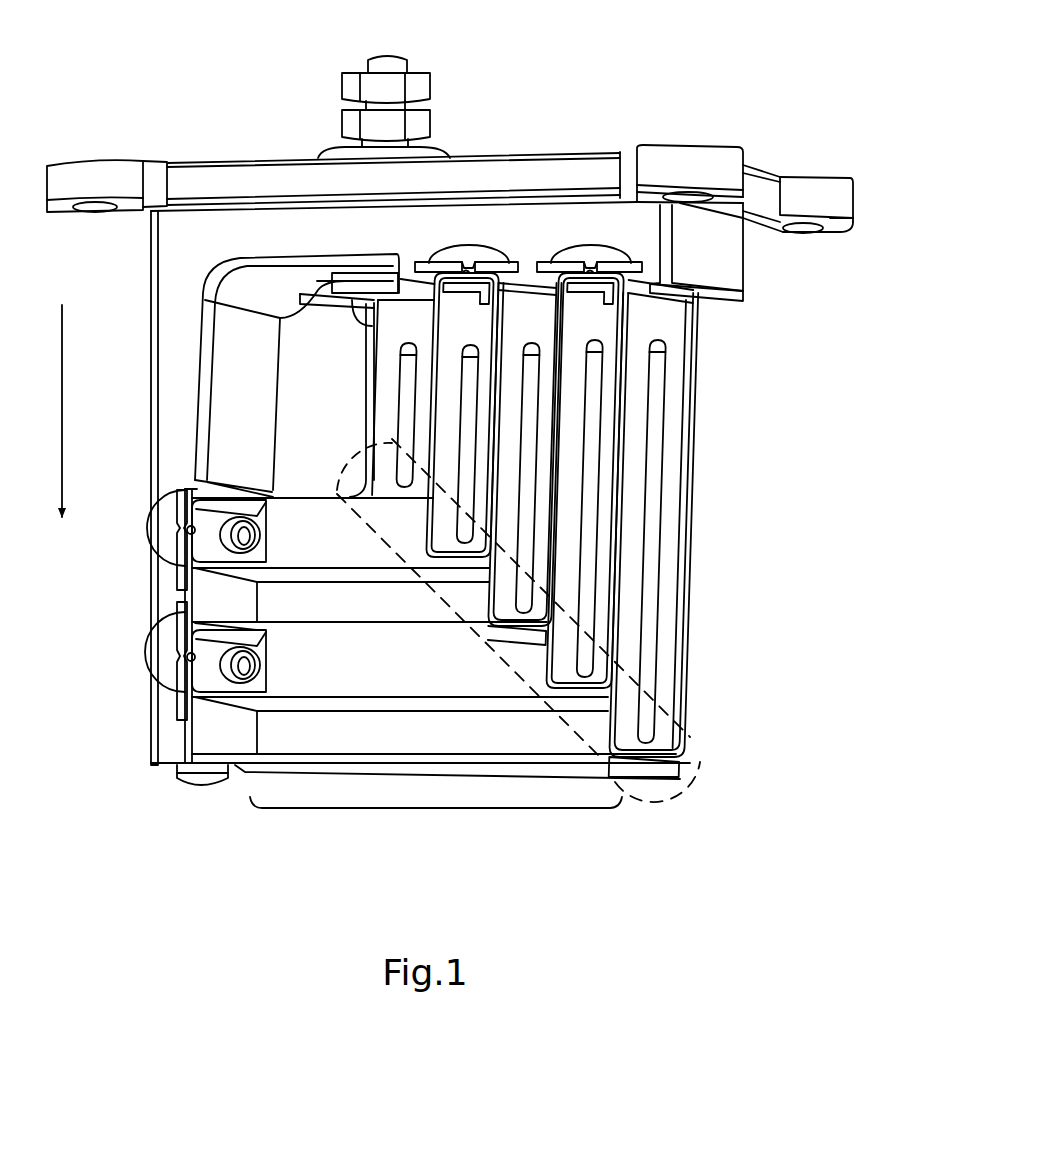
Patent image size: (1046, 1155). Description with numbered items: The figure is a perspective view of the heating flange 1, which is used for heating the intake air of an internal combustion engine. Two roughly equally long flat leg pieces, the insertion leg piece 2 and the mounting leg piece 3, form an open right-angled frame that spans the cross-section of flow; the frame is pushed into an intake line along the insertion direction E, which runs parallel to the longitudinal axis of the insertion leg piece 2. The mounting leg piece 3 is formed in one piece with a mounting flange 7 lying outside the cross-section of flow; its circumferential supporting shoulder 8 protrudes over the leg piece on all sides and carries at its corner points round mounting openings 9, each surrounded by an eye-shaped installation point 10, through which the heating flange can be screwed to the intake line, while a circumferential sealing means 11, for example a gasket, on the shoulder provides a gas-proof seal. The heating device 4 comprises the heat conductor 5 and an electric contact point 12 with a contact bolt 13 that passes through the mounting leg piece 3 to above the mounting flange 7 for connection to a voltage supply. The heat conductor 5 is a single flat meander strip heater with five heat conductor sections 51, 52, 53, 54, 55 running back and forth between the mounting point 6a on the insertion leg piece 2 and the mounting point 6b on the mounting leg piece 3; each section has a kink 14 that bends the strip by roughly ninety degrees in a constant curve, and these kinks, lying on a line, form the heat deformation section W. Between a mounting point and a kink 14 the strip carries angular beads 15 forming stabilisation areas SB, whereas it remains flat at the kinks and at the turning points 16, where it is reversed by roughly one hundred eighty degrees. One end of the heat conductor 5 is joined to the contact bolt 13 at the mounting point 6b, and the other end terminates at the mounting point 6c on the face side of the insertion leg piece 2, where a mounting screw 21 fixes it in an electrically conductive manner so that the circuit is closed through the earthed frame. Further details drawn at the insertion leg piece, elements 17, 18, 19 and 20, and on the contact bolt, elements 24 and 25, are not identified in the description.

The heating flange 1 is at (677, 58).
The insertion leg piece 2 is at (165, 389).
The mounting leg piece 3 is at (742, 288).
The heating device 4 is at (774, 487).
The heat conductor 5 is at (762, 338).
The heat conductor section 51 is at (687, 333).
The heat conductor section 52 is at (608, 378).
The heat conductor section 53 is at (550, 399).
The heat conductor section 54 is at (483, 414).
The heat conductor section 55 is at (421, 444).
The mounting point 6a is at (168, 716).
The mounting point 6b is at (585, 232).
The mounting point 6c is at (202, 800).
The mounting flange 7 is at (541, 174).
The supporting shoulder 8 is at (836, 233).
The mounting opening 9 is at (806, 235).
The installation point 10 is at (845, 195).
The sealing means 11 is at (848, 229).
The electric contact point 12 is at (346, 55).
The contact bolt 13 is at (392, 64).
The kink 14 is at (600, 702).
The angular bead 15 is at (646, 633).
The turning point 16 is at (186, 689).
The rivet 17 is at (185, 671).
The spring clip 18 is at (176, 636).
The upper tab 19 is at (180, 573).
The rivet 20 is at (185, 529).
The mounting screw 21 is at (183, 781).
The lower nut 24 is at (345, 123).
The upper nut 25 is at (344, 84).
The insertion direction E is at (62, 396).
The stabilisation area SB is at (436, 825).
The heat deformation section W is at (526, 639).